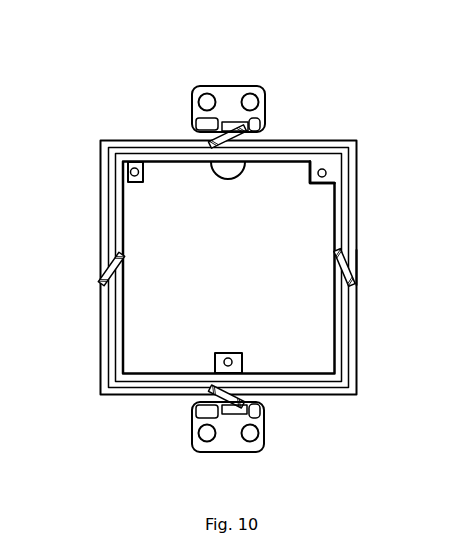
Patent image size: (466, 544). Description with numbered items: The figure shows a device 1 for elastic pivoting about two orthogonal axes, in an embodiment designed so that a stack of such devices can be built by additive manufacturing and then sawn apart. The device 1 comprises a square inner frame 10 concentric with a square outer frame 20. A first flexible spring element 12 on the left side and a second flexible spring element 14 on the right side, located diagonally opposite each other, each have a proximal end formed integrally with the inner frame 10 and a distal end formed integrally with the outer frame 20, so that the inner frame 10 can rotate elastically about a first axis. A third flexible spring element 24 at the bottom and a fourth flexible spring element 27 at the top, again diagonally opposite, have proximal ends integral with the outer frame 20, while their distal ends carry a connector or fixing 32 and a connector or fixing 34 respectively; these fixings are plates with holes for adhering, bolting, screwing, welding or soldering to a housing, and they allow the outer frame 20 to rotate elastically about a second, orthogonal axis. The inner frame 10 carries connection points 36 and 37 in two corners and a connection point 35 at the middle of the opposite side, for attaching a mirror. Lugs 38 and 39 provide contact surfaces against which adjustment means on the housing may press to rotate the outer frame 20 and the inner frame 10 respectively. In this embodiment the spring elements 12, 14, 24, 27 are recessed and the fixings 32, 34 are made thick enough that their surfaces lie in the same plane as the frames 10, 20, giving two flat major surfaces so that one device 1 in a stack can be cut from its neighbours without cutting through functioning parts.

The device 1 is at (75, 230).
The inner frame 10 is at (122, 308).
The first flexible spring element 12 is at (122, 258).
The second flexible spring element 14 is at (336, 270).
The outer frame 20 is at (100, 170).
The third flexible spring element 24 is at (238, 394).
The fourth flexible spring element 27 is at (262, 150).
The connector or fixing 32 is at (232, 446).
The connector or fixing 34 is at (229, 87).
The connection point 35 is at (242, 355).
The connection point 36 is at (143, 183).
The connection point 37 is at (300, 184).
The lug 38 is at (358, 272).
The lug 39 is at (232, 174).